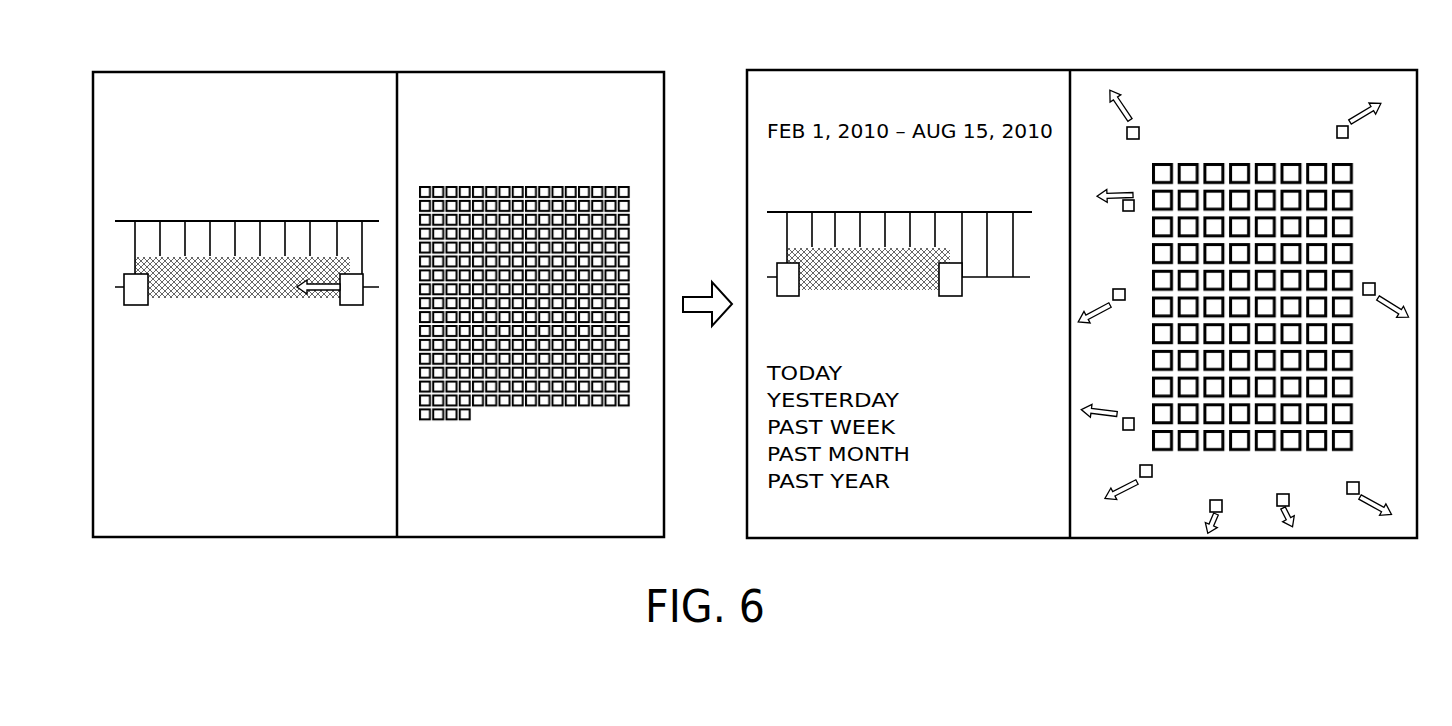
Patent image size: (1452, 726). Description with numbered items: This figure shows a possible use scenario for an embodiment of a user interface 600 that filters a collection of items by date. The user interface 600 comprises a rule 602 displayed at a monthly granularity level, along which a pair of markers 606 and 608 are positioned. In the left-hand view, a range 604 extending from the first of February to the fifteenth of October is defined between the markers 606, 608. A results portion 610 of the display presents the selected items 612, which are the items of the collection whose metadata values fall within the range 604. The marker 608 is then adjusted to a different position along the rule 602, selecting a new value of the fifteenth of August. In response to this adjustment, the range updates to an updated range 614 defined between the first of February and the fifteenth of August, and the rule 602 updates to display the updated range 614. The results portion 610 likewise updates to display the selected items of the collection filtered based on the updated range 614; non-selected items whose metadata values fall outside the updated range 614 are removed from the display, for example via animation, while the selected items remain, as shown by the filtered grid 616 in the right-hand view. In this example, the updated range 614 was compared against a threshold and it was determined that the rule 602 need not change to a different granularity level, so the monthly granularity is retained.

The user interface 600 is at (349, 72).
The rule 602 is at (304, 201).
The range 604 is at (207, 280).
The marker 606 is at (137, 305).
The marker 608 is at (350, 305).
The results portion 610 is at (520, 79).
The selected items 612 is at (471, 172).
The updated range 614 is at (858, 274).
The filtered content item grid 616 is at (1207, 141).